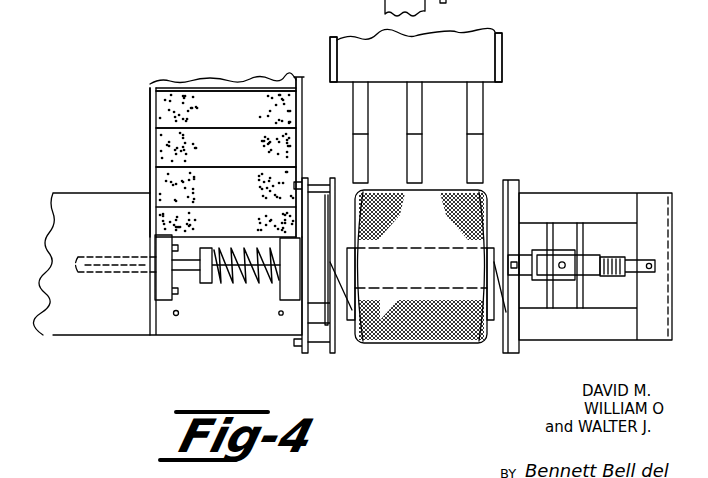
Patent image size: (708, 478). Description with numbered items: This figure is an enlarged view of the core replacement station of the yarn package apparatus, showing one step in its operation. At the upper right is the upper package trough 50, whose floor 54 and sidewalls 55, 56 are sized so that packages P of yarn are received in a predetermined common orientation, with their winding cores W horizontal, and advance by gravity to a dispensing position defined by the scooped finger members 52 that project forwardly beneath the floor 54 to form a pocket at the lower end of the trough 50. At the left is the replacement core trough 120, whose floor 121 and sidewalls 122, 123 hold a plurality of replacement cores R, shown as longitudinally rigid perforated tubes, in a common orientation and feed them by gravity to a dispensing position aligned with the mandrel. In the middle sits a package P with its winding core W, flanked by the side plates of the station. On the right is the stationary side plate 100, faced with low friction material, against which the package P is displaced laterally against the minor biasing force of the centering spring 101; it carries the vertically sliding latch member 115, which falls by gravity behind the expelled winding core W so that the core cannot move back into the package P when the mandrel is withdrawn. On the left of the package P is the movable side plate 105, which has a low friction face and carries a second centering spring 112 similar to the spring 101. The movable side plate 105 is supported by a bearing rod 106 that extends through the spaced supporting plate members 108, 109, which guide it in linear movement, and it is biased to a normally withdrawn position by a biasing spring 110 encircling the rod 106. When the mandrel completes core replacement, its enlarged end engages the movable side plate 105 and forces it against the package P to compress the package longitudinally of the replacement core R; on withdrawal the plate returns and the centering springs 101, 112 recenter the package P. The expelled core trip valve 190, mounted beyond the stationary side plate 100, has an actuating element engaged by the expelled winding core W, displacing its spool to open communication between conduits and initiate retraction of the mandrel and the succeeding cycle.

The upper package trough 50 is at (446, 91).
The finger members 52 is at (362, 115).
The floor 54 is at (434, 71).
The sidewall 55 is at (337, 40).
The sidewall 56 is at (496, 39).
The side plate 100 is at (507, 348).
The centering spring 101 is at (480, 326).
The movable side plate 105 is at (324, 326).
The bearing rod 106 is at (118, 264).
The supporting plate member 108 is at (150, 336).
The supporting plate member 109 is at (305, 354).
The biasing spring 110 is at (260, 280).
The second centering spring 112 is at (355, 300).
The sliding latch member 115 is at (515, 284).
The replacement core trough 120 is at (240, 76).
The floor 121 is at (220, 80).
The sidewall 122 is at (160, 86).
The sidewall 123 is at (271, 82).
The expelled core trip valve 190 is at (558, 254).
The replacement core R is at (156, 172).
The package P is at (426, 218).
The winding core W is at (434, 258).